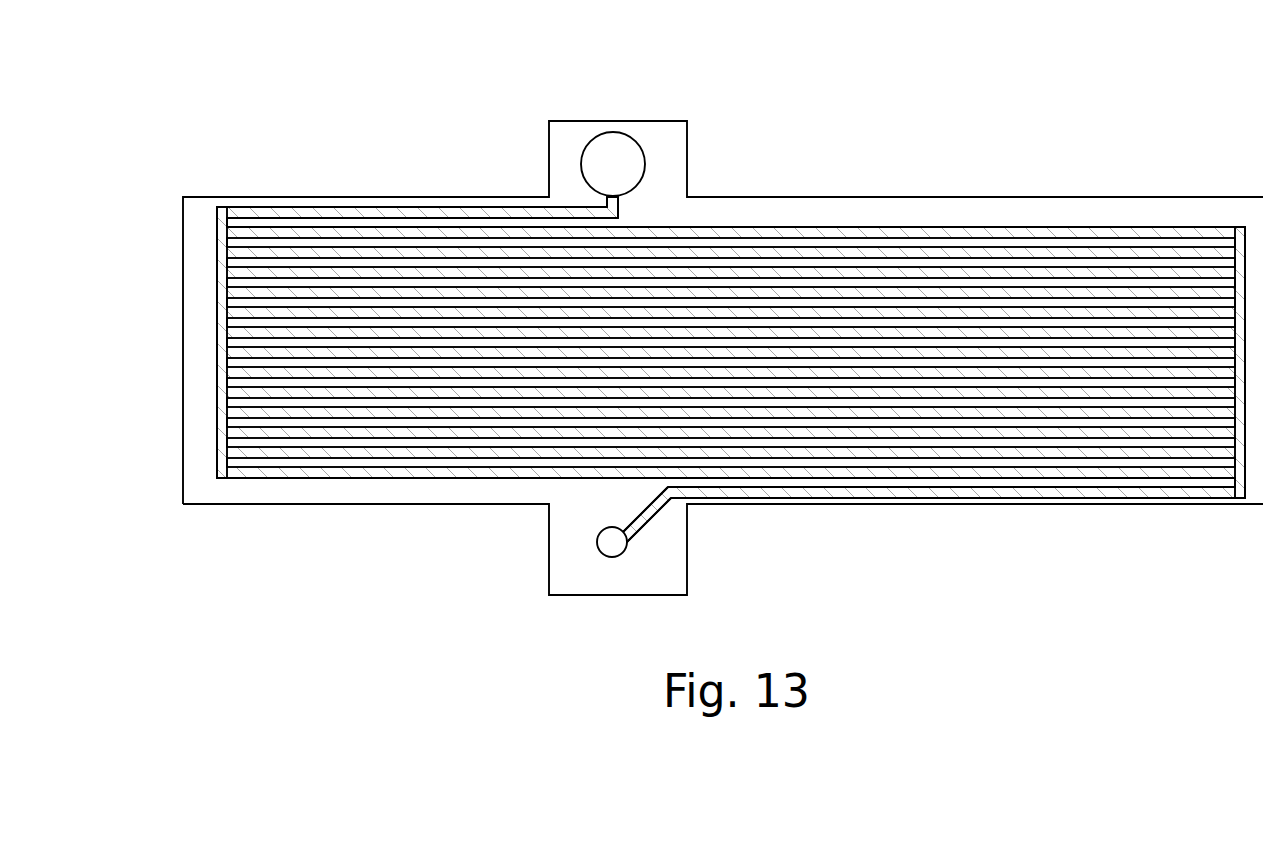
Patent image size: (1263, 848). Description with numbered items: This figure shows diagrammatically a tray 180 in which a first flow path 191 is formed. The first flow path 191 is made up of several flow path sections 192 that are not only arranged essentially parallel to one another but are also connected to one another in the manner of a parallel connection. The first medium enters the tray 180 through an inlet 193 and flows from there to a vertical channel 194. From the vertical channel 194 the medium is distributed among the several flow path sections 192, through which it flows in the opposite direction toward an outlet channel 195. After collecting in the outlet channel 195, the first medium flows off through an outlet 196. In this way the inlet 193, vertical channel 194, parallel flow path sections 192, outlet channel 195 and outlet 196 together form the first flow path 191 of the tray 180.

The tray 180 is at (356, 494).
The flow path sections 192 is at (1022, 248).
The first flow path 191 is at (749, 458).
The outlet channel 195 is at (216, 435).
The vertical channel 194 is at (1247, 510).
The outlet 196 is at (603, 148).
The inlet 193 is at (612, 545).